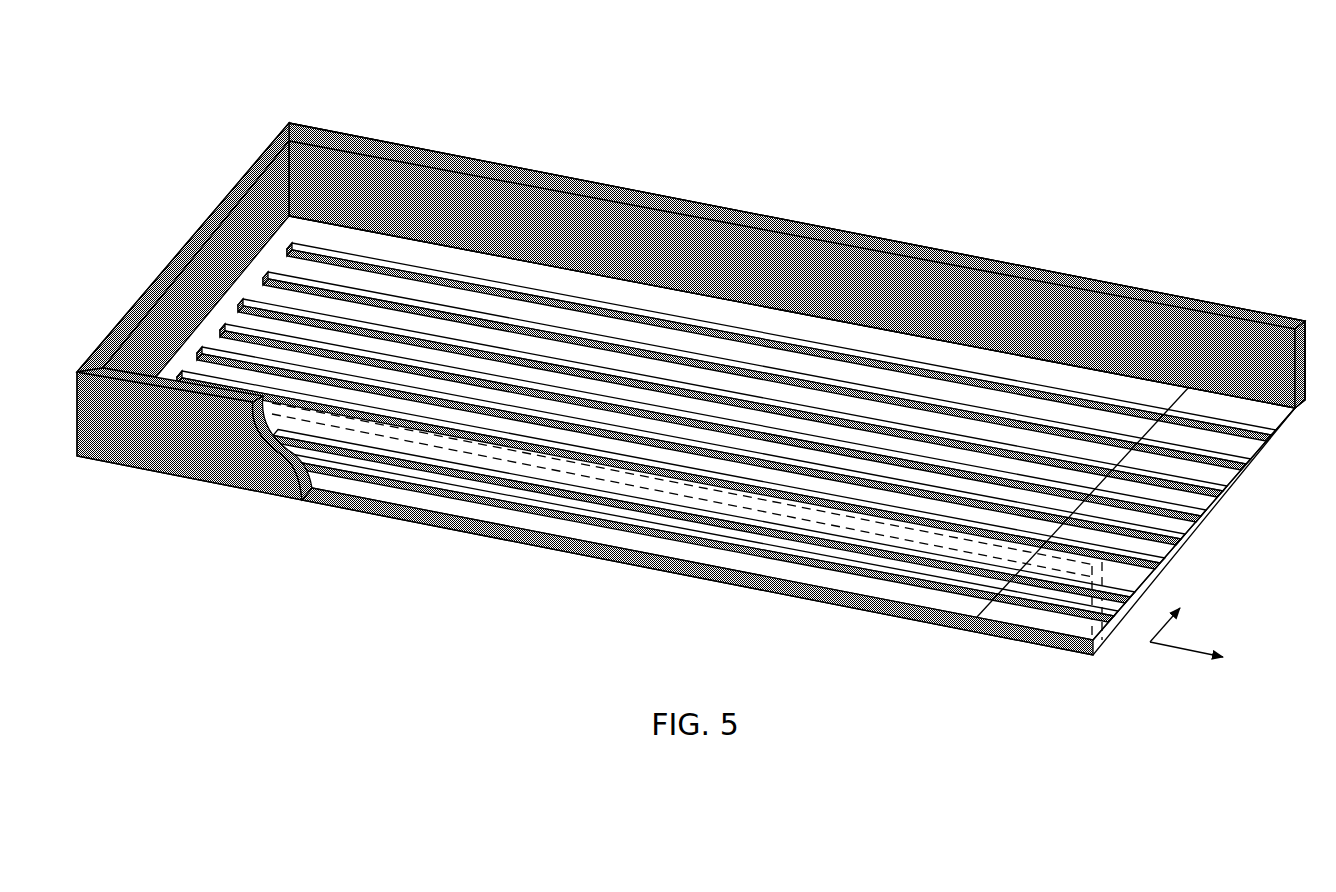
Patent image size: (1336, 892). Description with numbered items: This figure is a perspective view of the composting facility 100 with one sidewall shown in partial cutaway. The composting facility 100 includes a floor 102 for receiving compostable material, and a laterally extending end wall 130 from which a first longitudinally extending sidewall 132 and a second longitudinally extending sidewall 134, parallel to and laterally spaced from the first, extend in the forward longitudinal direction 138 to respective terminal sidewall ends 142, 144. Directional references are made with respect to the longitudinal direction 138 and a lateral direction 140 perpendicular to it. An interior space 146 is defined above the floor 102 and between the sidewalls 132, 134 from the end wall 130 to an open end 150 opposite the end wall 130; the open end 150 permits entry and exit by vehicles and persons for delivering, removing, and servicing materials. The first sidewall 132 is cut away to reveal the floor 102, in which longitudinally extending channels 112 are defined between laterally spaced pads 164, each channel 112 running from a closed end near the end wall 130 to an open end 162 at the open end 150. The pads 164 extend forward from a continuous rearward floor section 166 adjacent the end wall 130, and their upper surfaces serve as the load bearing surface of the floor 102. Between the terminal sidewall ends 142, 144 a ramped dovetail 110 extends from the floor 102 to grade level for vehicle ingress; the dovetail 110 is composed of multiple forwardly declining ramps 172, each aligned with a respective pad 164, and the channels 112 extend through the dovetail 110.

The composting facility 100 is at (742, 135).
The floor 102 is at (738, 408).
The ramped dovetail 110 is at (1134, 630).
The channels 112 is at (285, 305).
The end wall 130 is at (253, 178).
The first longitudinally extending sidewall 132 is at (177, 448).
The second longitudinally extending sidewall 134 is at (456, 152).
The longitudinal direction 138 is at (1206, 655).
The lateral direction 140 is at (1179, 613).
The terminal sidewall end 142 is at (1087, 573).
The terminal sidewall end 144 is at (1295, 318).
The interior space 146 is at (912, 283).
The open end 150 is at (1113, 222).
The open ends 162 is at (1272, 440).
The pads 164 is at (556, 348).
The continuous rearward floor section 166 is at (272, 250).
The forwardly declining ramps 172 is at (1180, 470).